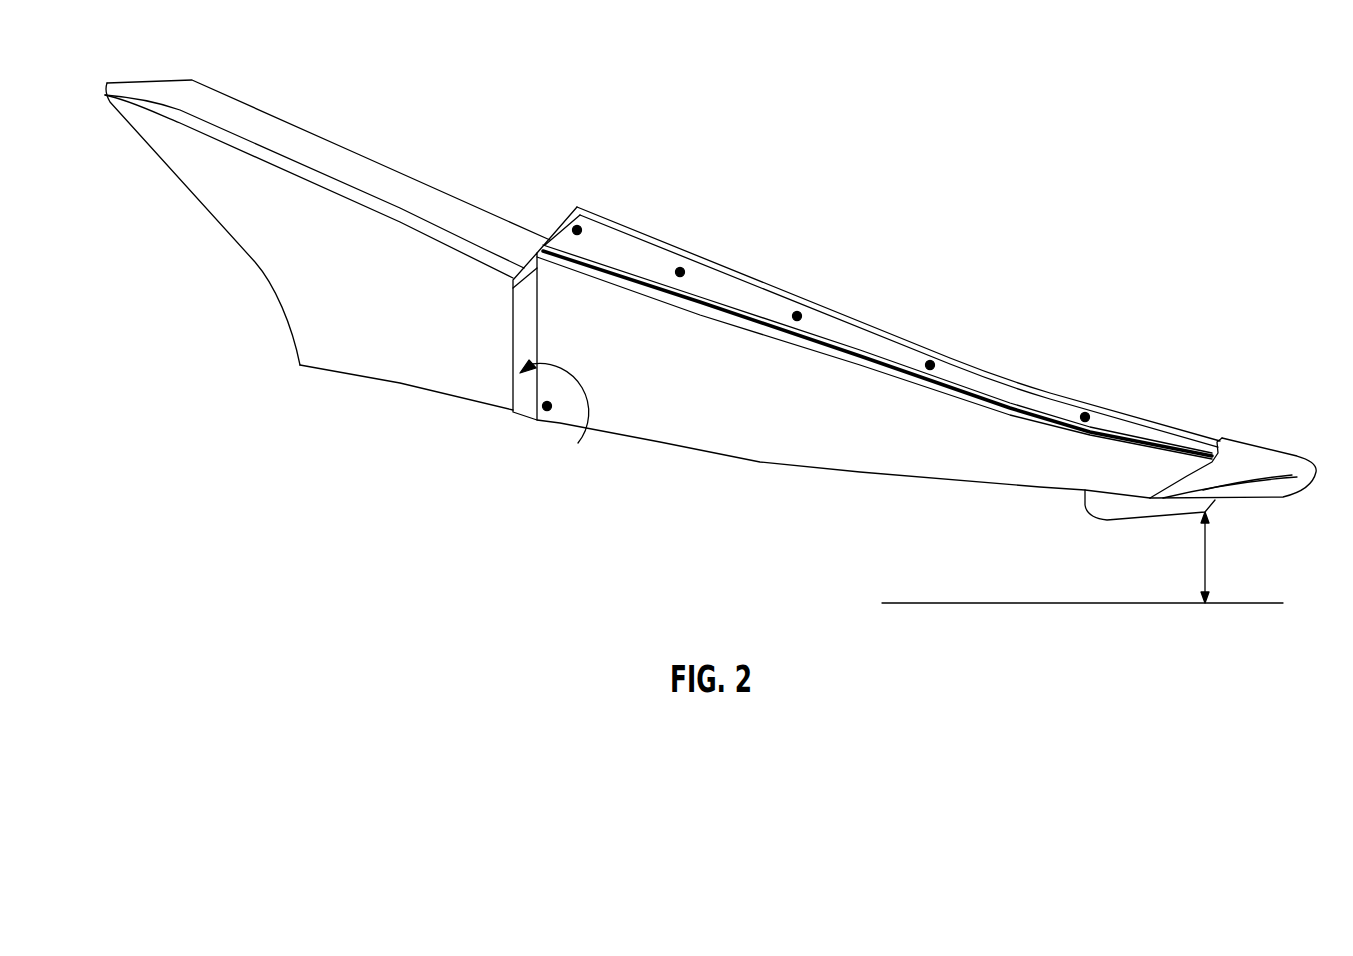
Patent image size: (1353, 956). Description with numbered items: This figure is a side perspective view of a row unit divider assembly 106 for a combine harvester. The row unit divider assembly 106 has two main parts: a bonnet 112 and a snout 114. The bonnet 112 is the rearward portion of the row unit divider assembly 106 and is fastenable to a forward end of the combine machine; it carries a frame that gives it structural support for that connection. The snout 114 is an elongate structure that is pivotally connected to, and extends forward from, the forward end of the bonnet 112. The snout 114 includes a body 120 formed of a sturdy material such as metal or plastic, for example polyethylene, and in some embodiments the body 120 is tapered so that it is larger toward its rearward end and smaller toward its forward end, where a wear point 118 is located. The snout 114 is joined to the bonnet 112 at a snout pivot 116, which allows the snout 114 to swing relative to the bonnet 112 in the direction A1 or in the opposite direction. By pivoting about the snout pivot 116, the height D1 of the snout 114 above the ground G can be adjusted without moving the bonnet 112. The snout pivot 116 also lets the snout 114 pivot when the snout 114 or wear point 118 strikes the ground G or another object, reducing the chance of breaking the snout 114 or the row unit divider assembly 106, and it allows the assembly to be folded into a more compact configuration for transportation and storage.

The row unit divider assembly 106 is at (709, 324).
The bonnet 112 is at (168, 90).
The snout 114 is at (772, 307).
The snout pivot 116 is at (523, 418).
The wear point 118 is at (1256, 458).
The snout body 120 is at (856, 319).
The direction A1 is at (578, 443).
The height D1 is at (1208, 561).
The ground G is at (1058, 601).